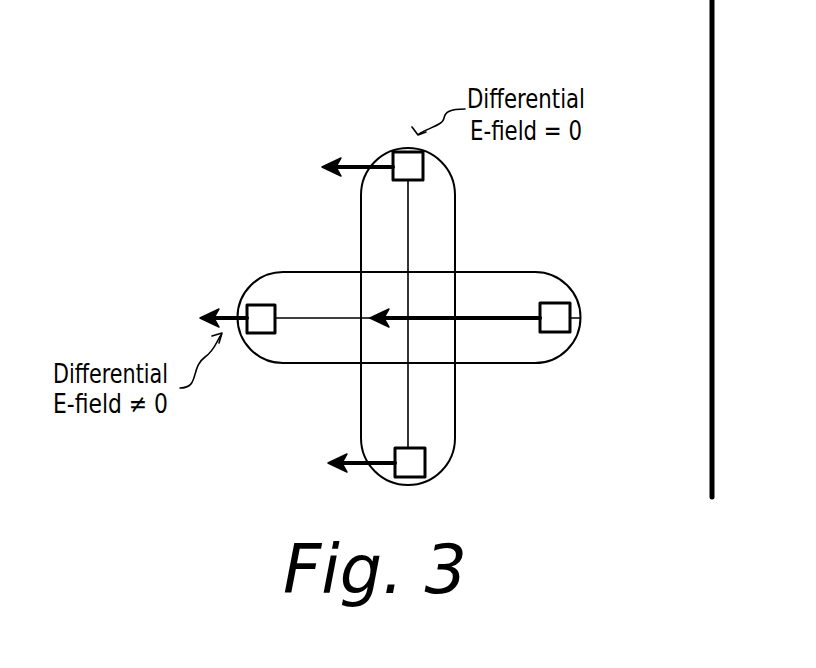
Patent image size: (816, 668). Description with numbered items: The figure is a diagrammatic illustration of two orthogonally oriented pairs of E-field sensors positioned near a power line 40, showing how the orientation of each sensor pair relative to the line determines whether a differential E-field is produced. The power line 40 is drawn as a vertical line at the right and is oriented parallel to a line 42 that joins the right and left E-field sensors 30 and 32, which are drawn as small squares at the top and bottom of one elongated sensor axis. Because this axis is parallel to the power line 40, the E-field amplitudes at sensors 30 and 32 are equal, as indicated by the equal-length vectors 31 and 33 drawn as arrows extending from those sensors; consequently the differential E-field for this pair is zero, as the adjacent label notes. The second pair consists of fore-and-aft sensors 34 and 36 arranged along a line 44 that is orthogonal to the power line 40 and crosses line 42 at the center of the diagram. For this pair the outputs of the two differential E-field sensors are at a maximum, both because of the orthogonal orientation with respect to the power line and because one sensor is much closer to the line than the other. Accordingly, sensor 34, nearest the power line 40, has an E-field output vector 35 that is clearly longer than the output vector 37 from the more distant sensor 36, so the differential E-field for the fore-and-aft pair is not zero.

The E-field sensor 30 is at (396, 151).
The E-field output vector 31 is at (347, 175).
The E-field sensor 32 is at (410, 465).
The E-field output vector 33 is at (358, 468).
The fore-and-aft E-field sensor 34 is at (560, 320).
The E-field output vector 35 is at (488, 313).
The fore-and-aft E-field sensor 36 is at (257, 312).
The E-field output vector 37 is at (213, 308).
The power line 40 is at (708, 112).
The line between right and left E-field sensors 42 is at (405, 252).
The line between fore-and-aft sensors 44 is at (335, 318).